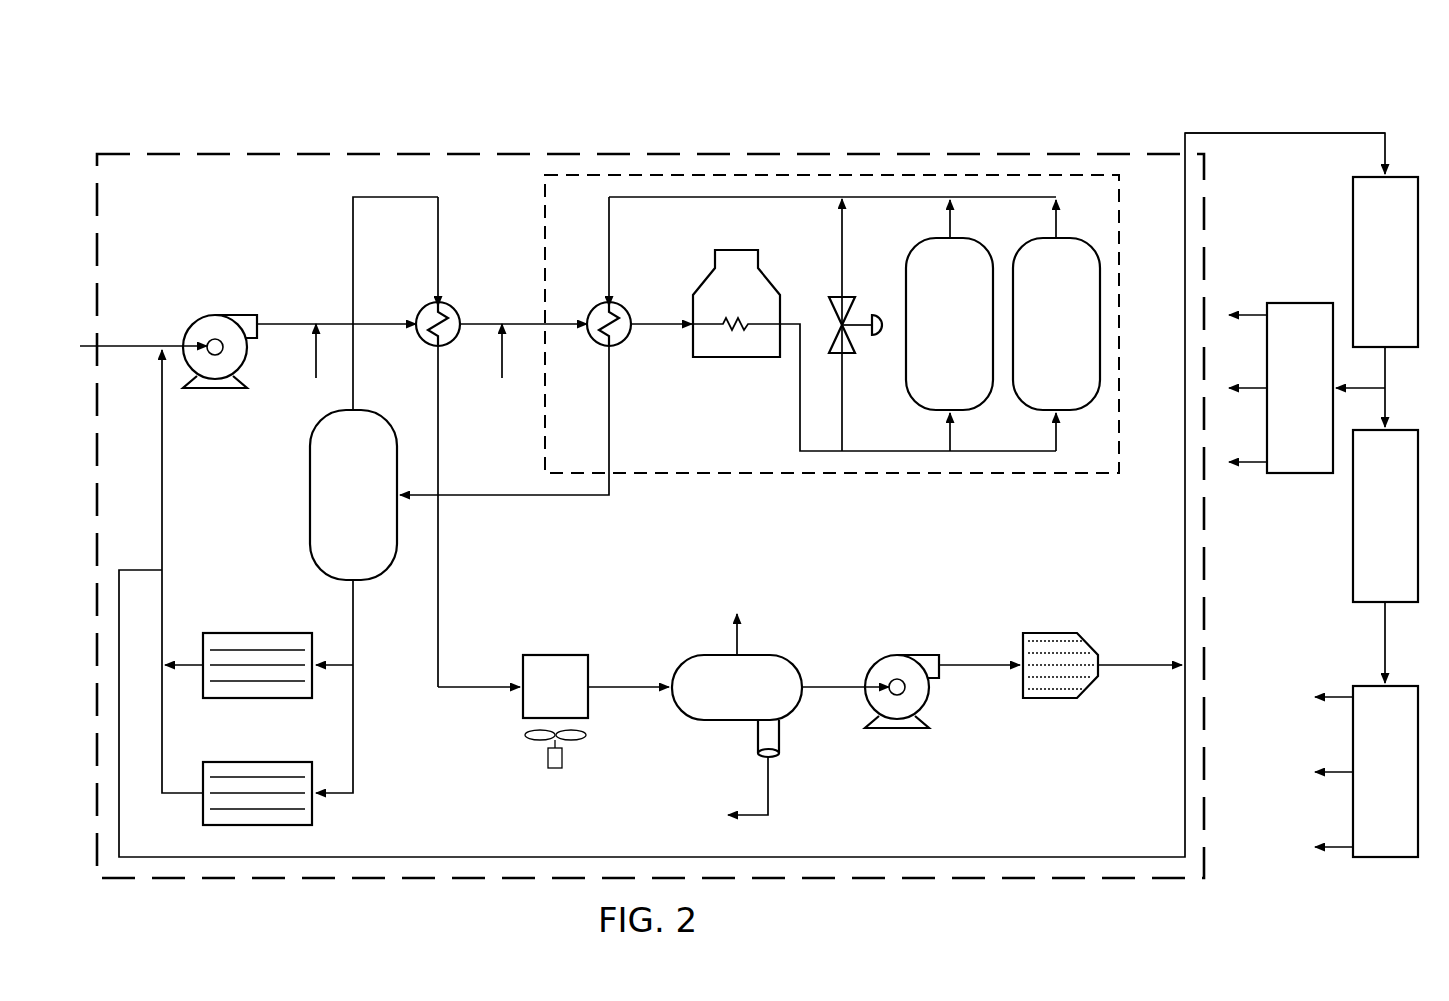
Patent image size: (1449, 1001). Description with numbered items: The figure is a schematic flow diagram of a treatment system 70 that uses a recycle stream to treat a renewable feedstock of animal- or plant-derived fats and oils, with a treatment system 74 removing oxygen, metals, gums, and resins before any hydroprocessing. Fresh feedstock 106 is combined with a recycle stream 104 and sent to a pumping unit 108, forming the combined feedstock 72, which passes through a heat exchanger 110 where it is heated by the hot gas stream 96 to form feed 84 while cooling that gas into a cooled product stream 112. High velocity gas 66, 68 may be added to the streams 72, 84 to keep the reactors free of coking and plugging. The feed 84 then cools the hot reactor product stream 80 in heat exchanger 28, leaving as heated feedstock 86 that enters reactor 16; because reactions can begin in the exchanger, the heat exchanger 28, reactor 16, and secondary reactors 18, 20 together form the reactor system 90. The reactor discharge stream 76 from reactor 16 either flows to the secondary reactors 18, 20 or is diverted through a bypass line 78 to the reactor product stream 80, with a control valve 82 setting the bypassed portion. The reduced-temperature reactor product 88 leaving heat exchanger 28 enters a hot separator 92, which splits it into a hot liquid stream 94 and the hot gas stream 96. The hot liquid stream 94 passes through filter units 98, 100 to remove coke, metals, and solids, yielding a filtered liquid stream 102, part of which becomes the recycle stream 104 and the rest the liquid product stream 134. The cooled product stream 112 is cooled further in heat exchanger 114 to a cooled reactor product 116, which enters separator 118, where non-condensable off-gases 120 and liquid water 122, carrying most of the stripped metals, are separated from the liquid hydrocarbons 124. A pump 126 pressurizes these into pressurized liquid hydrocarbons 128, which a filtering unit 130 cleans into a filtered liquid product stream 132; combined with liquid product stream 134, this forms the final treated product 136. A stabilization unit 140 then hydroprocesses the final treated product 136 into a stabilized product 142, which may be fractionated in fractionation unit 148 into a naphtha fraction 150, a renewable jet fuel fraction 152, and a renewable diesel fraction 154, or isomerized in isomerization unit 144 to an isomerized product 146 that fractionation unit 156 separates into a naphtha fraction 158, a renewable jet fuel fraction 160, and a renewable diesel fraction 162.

The reactor 16 is at (690, 338).
The secondary reactor 18 is at (949, 325).
The secondary reactor 20 is at (1056, 325).
The heat exchanger 28 is at (598, 314).
The high velocity gas 66 is at (314, 360).
The high velocity gas 68 is at (500, 358).
The treatment system 70 is at (491, 114).
The feedstock 72 is at (288, 323).
The treatment system 74 is at (575, 154).
The reactor discharge stream 76 is at (799, 390).
The bypass line 78 is at (843, 390).
The reactor product stream 80 is at (810, 198).
The control valve 82 is at (856, 303).
The feed 84 is at (492, 321).
The heated feedstock 86 is at (662, 321).
The reduced-temperature reactor product 88 is at (611, 422).
The reactor system 90 is at (883, 480).
The hot separator 92 is at (353, 495).
The hot liquid stream 94 is at (353, 732).
The hot gas stream 96 is at (348, 264).
The filter unit 98 is at (294, 700).
The filter unit 100 is at (224, 762).
The filtered liquid stream 102 is at (162, 619).
The recycle stream 104 is at (162, 457).
The fresh feedstock 106 is at (154, 346).
The pumping unit 108 is at (217, 316).
The heat exchanger 110 is at (426, 314).
The cooled product stream 112 is at (480, 688).
The heat exchanger 114 is at (555, 711).
The cooled reactor product 116 is at (630, 690).
The separator 118 is at (737, 687).
The non-condensable off-gases 120 is at (739, 642).
The liquid water 122 is at (770, 783).
The liquid hydrocarbons 124 is at (842, 690).
The pump 126 is at (899, 730).
The pressurized liquid hydrocarbons 128 is at (990, 668).
The filtering unit 130 is at (1059, 700).
The filtered liquid product stream 132 is at (1141, 668).
The liquid product stream 134 is at (142, 570).
The final treated product 136 is at (1282, 132).
The stabilization unit 140 is at (1400, 174).
The stabilized product 142 is at (1386, 381).
The isomerization unit 144 is at (1353, 518).
The isomerized product 146 is at (1386, 644).
The fractionation unit 148 is at (1296, 302).
The naphtha fraction 150 is at (1240, 314).
The renewable jet fuel fraction 152 is at (1240, 388).
The renewable diesel fraction 154 is at (1240, 462).
The fractionation unit 156 is at (1395, 857).
The naphtha fraction 158 is at (1337, 701).
The renewable jet fuel fraction 160 is at (1337, 774).
The renewable diesel fraction 162 is at (1337, 849).